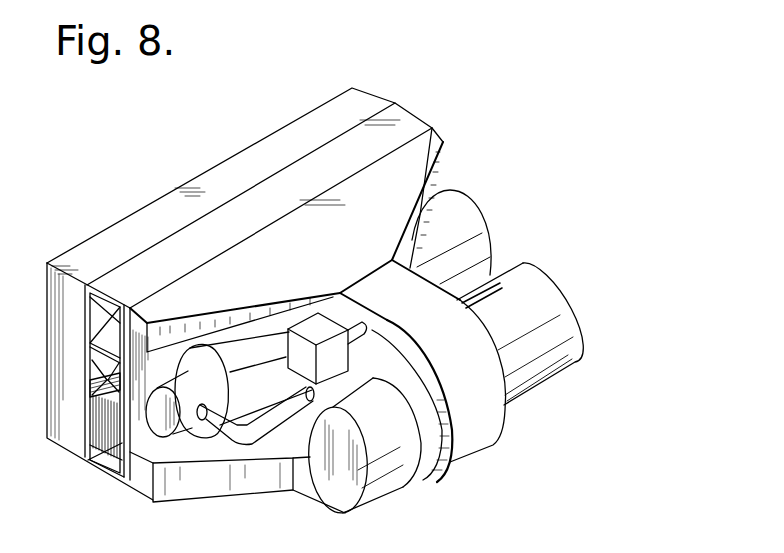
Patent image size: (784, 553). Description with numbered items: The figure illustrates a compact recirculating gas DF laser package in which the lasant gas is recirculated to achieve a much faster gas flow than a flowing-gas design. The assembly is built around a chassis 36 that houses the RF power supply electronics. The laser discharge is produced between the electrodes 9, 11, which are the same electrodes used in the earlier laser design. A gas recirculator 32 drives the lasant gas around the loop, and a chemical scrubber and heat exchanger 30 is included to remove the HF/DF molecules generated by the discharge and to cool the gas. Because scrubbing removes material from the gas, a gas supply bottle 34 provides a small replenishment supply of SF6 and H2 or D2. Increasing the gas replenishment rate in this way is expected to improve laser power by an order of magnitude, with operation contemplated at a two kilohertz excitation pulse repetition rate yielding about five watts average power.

The chassis 36 is at (185, 180).
The chemical scrubber and heat exchanger 30 is at (87, 417).
The electrode 9 is at (103, 355).
The electrode 11 is at (120, 360).
The gas supply bottle 34 is at (173, 430).
The gas recirculator 32 is at (436, 483).